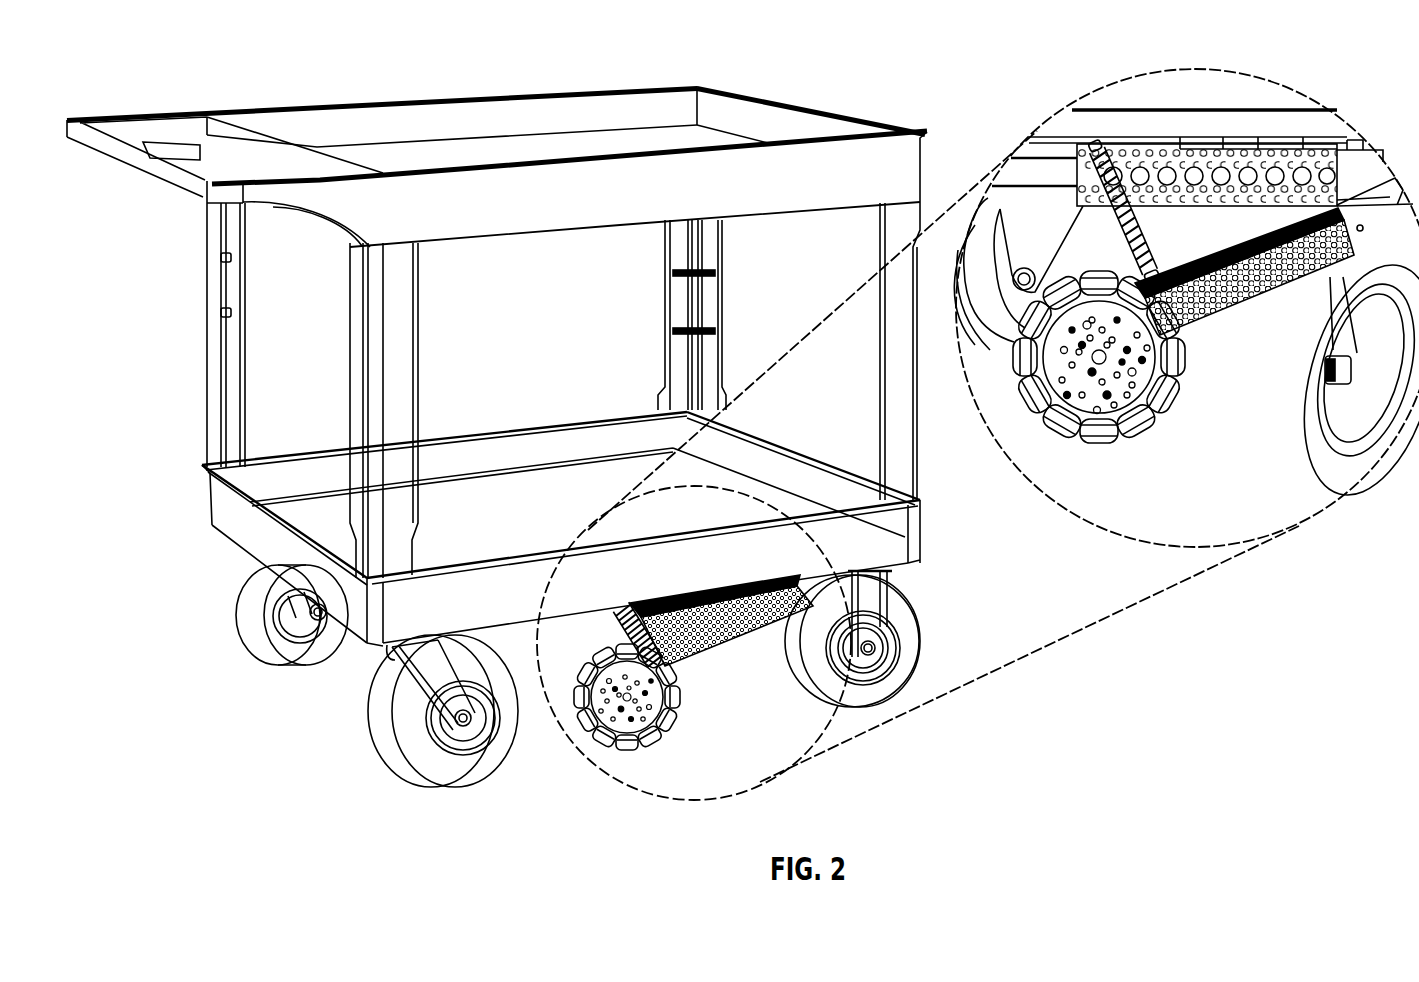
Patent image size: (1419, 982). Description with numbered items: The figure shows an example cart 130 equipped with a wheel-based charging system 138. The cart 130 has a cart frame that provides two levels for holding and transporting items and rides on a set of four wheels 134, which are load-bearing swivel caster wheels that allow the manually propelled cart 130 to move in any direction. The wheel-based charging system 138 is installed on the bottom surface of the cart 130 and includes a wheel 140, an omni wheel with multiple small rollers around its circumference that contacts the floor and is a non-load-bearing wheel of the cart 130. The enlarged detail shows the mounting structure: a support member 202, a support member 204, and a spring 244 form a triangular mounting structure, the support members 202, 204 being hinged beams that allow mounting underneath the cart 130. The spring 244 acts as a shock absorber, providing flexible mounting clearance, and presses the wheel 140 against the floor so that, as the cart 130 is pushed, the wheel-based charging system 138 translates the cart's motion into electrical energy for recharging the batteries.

The cart 130 is at (752, 97).
The wheels 134 is at (247, 598).
The wheel-based charging system 138 is at (561, 769).
The wheel 140 is at (667, 720).
The support member 202 is at (1243, 150).
The support member 204 is at (737, 632).
The spring 244 is at (613, 623).